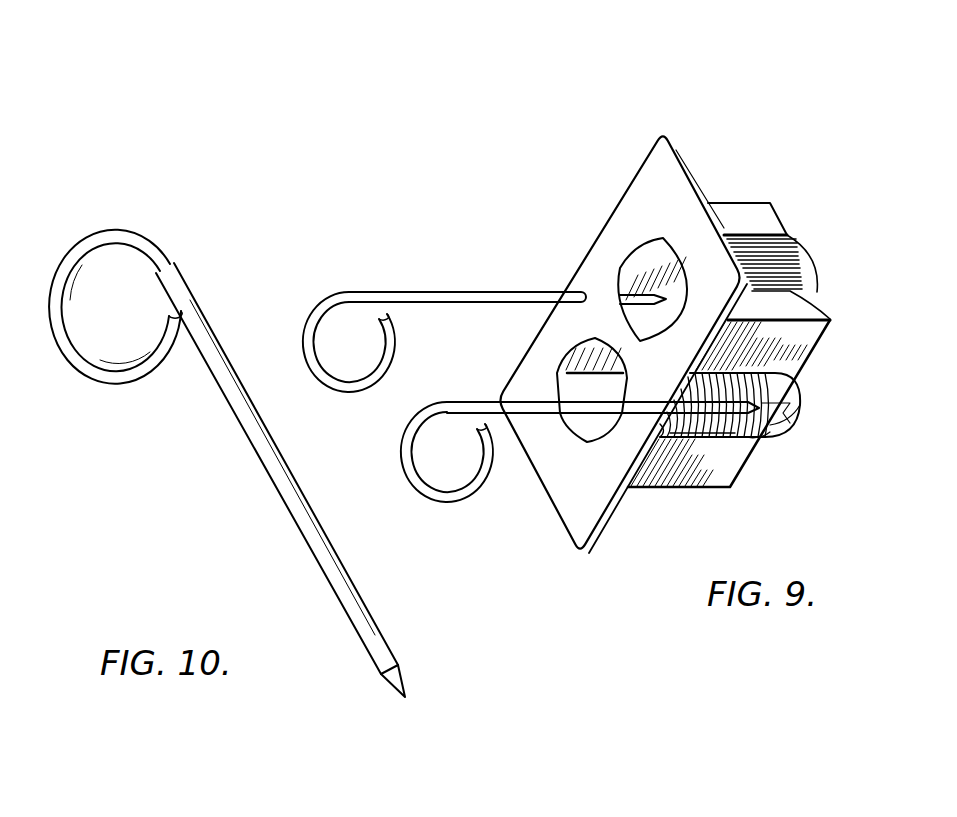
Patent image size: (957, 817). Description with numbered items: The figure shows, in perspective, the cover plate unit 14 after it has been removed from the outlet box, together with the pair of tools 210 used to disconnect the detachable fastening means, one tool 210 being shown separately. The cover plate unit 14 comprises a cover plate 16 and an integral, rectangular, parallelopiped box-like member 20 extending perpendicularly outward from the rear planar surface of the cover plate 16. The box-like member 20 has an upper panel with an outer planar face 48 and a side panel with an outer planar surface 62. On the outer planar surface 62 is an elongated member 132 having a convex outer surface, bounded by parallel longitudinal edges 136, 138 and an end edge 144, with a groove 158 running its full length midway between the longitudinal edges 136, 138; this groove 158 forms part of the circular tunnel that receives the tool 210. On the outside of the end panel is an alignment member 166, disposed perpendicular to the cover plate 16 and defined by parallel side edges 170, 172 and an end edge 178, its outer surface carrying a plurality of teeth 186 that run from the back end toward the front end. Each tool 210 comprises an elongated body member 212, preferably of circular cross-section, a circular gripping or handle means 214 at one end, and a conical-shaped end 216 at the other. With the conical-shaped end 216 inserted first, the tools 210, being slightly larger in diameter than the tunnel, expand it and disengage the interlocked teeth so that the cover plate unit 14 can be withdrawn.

In FIG. 9, the cover plate unit 14 is at (639, 92).
In FIG. 9, the cover plate 16 is at (622, 219).
In FIG. 9, the box-like member 20 is at (761, 330).
In FIG. 9, the outer planar face 48 is at (810, 298).
In FIG. 9, the outer planar surface 62 is at (707, 462).
In FIG. 9, the elongated member 132 is at (722, 452).
In FIG. 9, the longitudinal edge 136 is at (800, 372).
In FIG. 9, the longitudinal edge 138 is at (758, 441).
In FIG. 9, the end edge 144 is at (786, 430).
In FIG. 9, the groove 158 is at (790, 410).
In FIG. 9, the alignment member 166 is at (773, 225).
In FIG. 9, the side edge 170 is at (740, 234).
In FIG. 9, the side edge 172 is at (830, 320).
In FIG. 9, the end edge 178 is at (809, 253).
In FIG. 9, the teeth 186 is at (774, 243).
In FIG. 10, the tool 210 is at (222, 461).
In FIG. 9, the tool 210 is at (420, 284).
In FIG. 10, the body member 212 is at (310, 546).
In FIG. 10, the gripping or handle means 214 is at (88, 240).
In FIG. 10, the conical-shaped end 216 is at (393, 696).